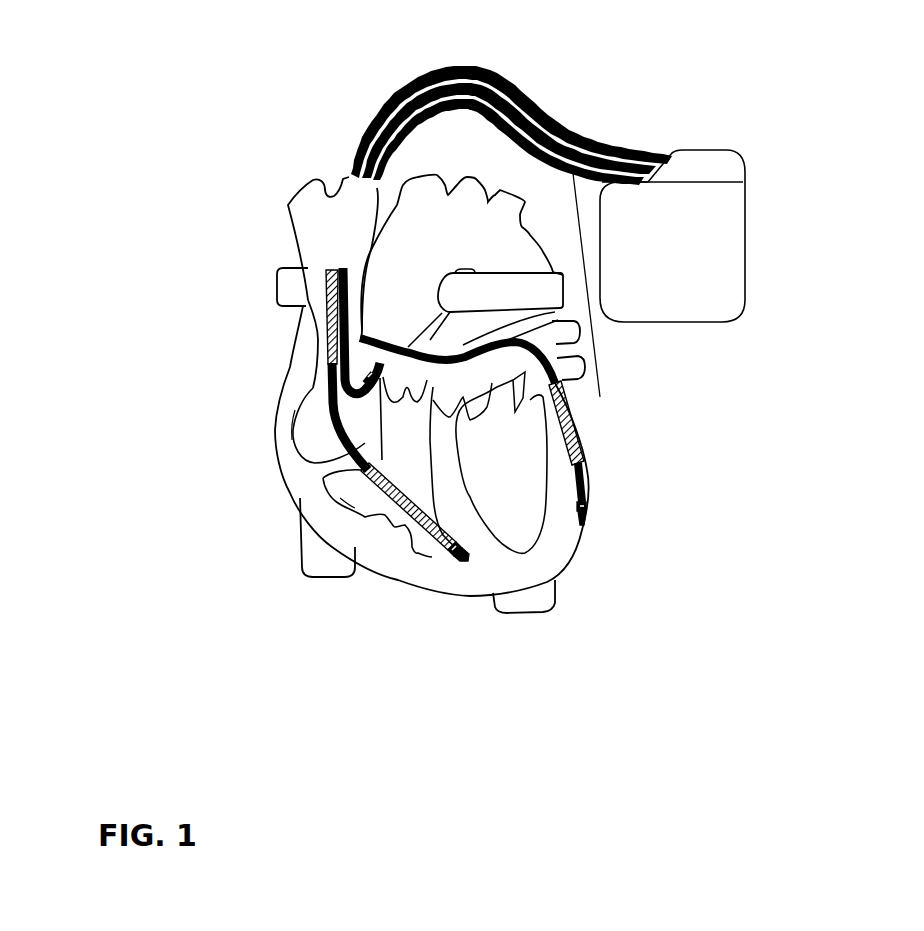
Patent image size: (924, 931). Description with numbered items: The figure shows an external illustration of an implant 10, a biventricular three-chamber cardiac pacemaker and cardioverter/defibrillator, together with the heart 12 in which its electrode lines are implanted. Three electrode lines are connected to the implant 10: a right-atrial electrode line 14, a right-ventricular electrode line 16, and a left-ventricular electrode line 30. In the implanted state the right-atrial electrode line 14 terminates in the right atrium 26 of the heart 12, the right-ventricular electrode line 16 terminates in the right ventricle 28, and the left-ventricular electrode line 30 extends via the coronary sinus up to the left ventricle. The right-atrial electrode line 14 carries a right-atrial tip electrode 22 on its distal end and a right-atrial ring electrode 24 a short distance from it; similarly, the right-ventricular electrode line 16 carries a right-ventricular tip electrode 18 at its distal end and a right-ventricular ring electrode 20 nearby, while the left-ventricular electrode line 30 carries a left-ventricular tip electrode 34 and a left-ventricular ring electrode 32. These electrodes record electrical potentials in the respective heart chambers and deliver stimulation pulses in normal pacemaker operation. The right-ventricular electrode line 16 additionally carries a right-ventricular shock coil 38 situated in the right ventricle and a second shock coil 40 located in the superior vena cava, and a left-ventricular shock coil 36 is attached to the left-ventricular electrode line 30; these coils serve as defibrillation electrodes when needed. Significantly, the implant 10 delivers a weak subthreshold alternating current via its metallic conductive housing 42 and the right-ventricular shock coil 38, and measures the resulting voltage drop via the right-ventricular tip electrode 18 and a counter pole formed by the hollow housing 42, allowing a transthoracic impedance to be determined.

The implant 10 is at (599, 248).
The heart 12 is at (246, 494).
The right-atrial electrode line 14 is at (440, 76).
The right-ventricular electrode line 16 is at (376, 119).
The right-ventricular tip electrode 18 is at (463, 558).
The right-ventricular ring electrode 20 is at (448, 551).
The right-atrial tip electrode 22 is at (378, 361).
The right-atrial ring electrode 24 is at (369, 377).
The right atrium 26 is at (313, 425).
The right ventricle 28 is at (378, 512).
The left-ventricular electrode line 30 is at (488, 297).
The left-ventricular ring electrode 32 is at (587, 508).
The left-ventricular tip electrode 34 is at (583, 525).
The left-ventricular shock coil 36 is at (584, 447).
The right-ventricular shock coil 38 is at (377, 490).
The second shock coil 40 is at (325, 330).
The housing 42 is at (695, 290).